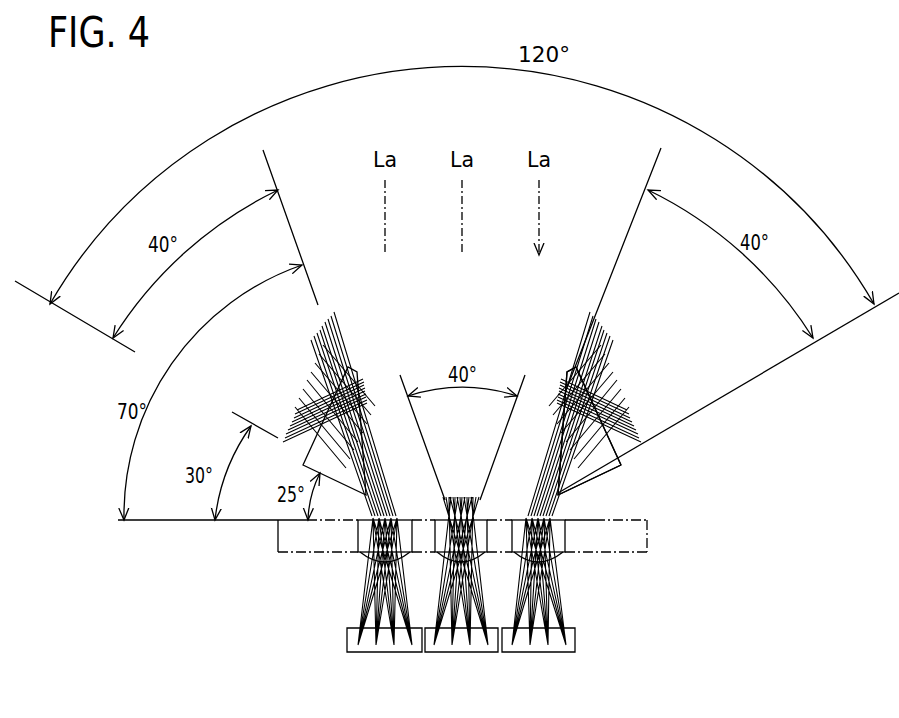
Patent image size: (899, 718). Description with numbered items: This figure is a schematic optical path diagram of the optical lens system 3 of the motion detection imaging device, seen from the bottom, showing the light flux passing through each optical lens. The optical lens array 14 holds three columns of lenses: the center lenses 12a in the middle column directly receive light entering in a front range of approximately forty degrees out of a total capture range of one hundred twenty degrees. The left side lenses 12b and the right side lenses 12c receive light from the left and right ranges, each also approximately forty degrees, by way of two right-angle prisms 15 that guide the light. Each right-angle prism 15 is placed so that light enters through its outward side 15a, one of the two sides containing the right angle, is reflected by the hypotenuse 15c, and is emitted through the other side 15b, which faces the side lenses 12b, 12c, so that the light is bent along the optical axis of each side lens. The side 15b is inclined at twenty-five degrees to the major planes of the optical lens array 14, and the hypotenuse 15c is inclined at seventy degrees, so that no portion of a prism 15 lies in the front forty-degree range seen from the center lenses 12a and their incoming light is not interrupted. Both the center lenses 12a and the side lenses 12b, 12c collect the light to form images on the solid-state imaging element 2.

The solid-state imaging element 2 is at (572, 640).
The optical lens system 3 is at (708, 468).
The center lens 12a is at (436, 545).
The left side lens 12b is at (360, 552).
The right side lens 12c is at (565, 552).
The optical lens array 14 is at (278, 537).
The 45-45-90 degree right-angle prism 15 is at (318, 410).
The outward side 15a is at (602, 417).
The other side 15b is at (621, 467).
The hypotenuse 15c is at (562, 388).